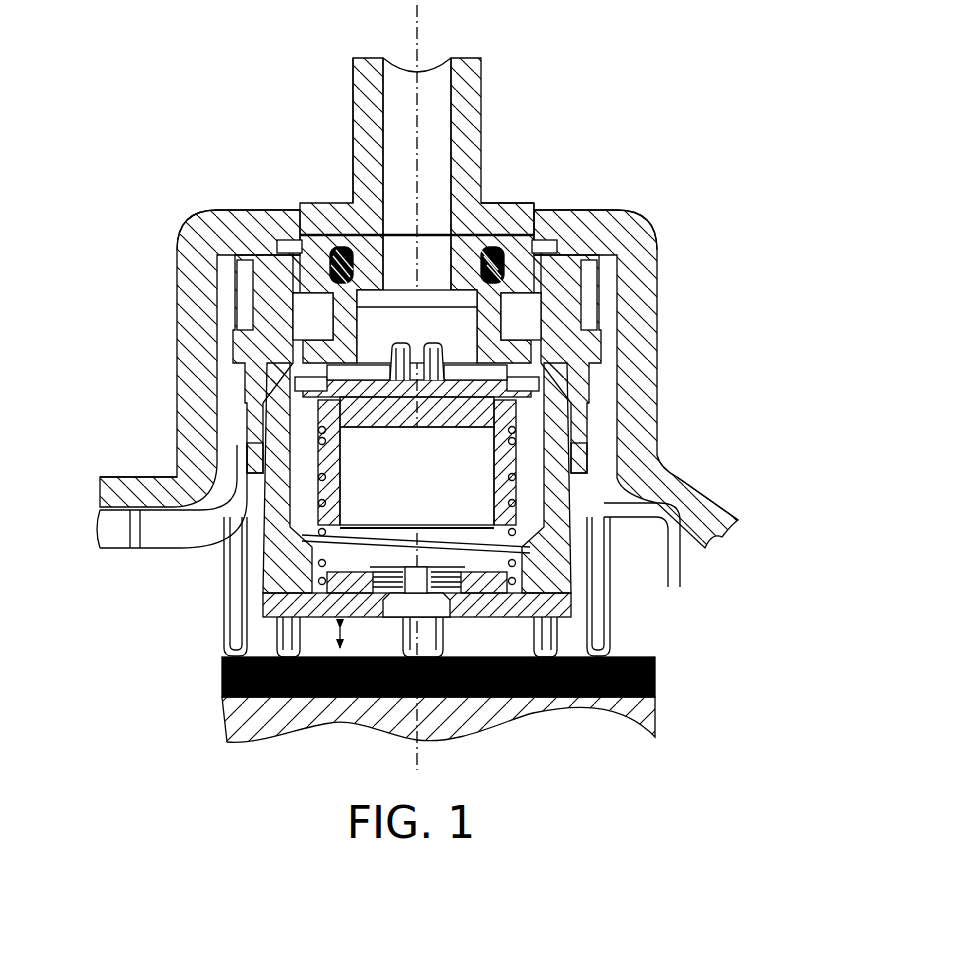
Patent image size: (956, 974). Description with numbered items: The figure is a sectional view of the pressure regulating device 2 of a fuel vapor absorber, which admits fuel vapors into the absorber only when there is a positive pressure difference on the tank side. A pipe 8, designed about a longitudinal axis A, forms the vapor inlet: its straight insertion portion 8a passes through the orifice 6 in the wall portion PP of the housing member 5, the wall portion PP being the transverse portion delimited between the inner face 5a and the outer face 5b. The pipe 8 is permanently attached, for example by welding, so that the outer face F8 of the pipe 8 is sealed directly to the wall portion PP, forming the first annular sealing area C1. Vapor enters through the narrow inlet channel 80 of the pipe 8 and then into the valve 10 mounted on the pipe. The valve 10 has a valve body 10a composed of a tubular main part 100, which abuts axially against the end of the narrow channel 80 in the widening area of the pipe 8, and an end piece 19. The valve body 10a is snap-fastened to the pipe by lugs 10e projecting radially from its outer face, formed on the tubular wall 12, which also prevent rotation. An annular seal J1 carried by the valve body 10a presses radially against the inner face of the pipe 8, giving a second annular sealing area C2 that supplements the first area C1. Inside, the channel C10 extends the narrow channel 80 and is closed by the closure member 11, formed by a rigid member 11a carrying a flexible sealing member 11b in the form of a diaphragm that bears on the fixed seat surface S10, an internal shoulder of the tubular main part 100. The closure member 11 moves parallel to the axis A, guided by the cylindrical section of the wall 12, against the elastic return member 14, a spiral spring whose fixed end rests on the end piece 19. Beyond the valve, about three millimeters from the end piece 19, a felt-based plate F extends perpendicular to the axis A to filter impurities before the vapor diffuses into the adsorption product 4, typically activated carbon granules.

The longitudinal axis A is at (426, 32).
The pressure regulating device 2 is at (660, 176).
The pipe 8 is at (421, 210).
The narrow inlet channel 80 is at (400, 117).
The insertion portion 8a is at (355, 143).
The orifice 6 is at (535, 213).
The wall portion PP is at (583, 223).
The housing member 5 is at (124, 476).
The inner face 5a is at (216, 326).
The outer face 5b is at (231, 211).
The second annular sealing area C2 is at (326, 266).
The first annular sealing area C1 is at (575, 260).
The annular seal J1 is at (236, 256).
The fixed seat surface S10 is at (290, 330).
The outer face of the pipe F8 is at (560, 316).
The channel C10 is at (303, 470).
The lugs 10e is at (250, 440).
The valve 10 is at (258, 501).
The valve body 10a is at (272, 542).
The tubular main part 100 is at (570, 480).
The closure member 11 is at (542, 464).
The rigid member 11a is at (523, 450).
The flexible sealing member 11b is at (540, 397).
The tubular wall 12 is at (565, 517).
The elastic return member 14 is at (510, 550).
The end piece 19 is at (293, 600).
The felt-based plate F is at (657, 683).
The adsorption product 4 is at (615, 715).